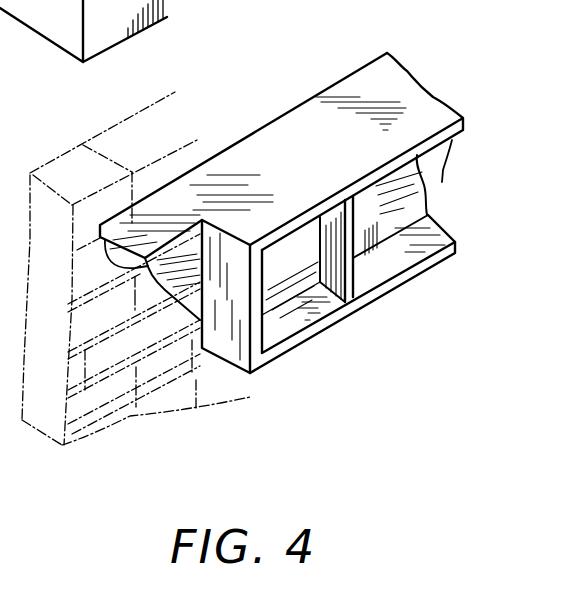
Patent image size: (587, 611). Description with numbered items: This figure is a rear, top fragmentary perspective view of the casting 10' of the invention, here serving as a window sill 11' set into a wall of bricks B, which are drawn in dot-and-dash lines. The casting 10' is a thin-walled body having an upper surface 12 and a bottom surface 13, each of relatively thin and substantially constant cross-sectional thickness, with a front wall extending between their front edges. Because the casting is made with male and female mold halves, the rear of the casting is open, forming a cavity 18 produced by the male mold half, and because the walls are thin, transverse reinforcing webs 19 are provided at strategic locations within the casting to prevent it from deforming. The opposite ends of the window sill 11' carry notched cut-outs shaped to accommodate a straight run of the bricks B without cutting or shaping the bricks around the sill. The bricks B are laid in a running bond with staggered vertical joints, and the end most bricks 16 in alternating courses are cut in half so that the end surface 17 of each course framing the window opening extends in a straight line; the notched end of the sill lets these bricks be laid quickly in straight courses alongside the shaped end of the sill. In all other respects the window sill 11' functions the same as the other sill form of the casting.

The casting 10' is at (383, 411).
The window sill 11' is at (358, 177).
The upper surface 12 is at (295, 117).
The bottom surface 13 is at (143, 33).
The end most bricks 16 is at (250, 245).
The end surface 17 is at (265, 220).
The cavity 18 is at (448, 183).
The transverse reinforcing webs 19 is at (353, 257).
The bricks B is at (90, 362).